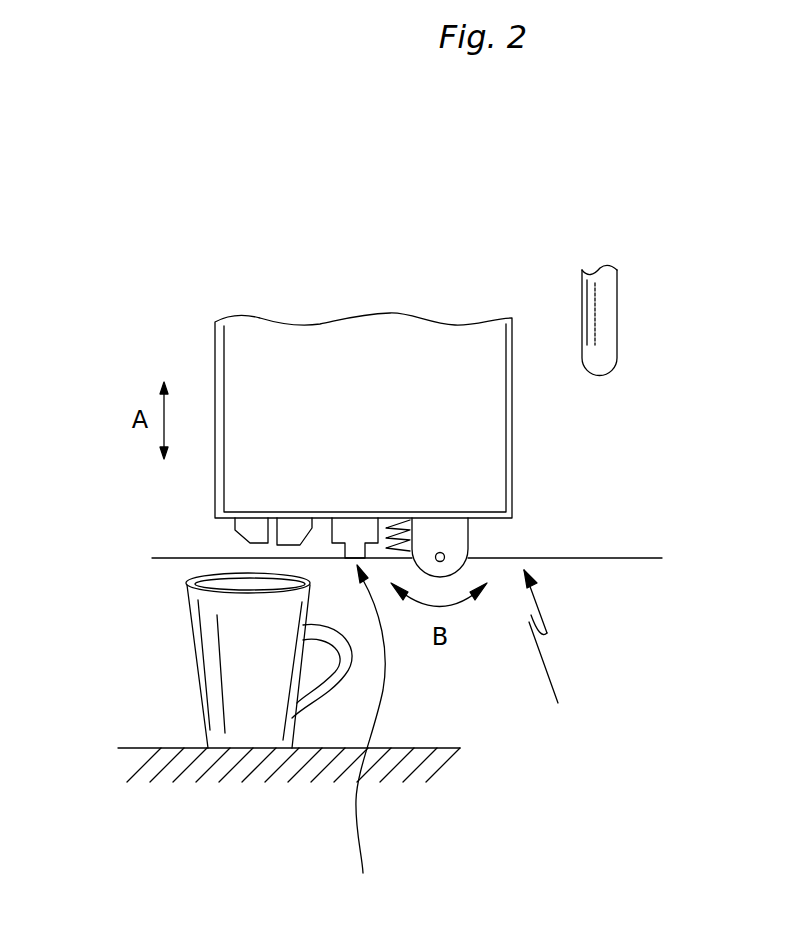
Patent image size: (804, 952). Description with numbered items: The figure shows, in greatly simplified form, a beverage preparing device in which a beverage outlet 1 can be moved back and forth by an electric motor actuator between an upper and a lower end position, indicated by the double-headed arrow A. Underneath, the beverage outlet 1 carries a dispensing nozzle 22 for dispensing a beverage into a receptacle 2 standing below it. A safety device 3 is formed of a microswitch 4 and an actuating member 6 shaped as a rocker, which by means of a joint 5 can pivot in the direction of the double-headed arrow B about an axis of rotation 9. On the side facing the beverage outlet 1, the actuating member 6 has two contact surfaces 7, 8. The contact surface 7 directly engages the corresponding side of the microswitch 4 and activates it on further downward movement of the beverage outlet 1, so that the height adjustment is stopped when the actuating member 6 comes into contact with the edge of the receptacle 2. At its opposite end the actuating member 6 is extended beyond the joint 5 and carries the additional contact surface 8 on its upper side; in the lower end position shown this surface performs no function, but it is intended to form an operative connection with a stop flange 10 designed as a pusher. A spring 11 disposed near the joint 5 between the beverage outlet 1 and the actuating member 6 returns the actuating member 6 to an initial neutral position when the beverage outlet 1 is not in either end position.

The beverage outlet 1 is at (245, 337).
The receptacle 2 is at (248, 693).
The safety device 3 is at (547, 653).
The microswitch 4 is at (360, 530).
The joint 5 is at (441, 531).
The actuating member 6 is at (577, 558).
The contact surface 7 is at (370, 735).
The additional contact surface 8 is at (636, 555).
The axis of rotation 9 is at (445, 553).
The stop flange 10 is at (600, 327).
The spring 11 is at (388, 547).
The dispensing nozzle 22 is at (235, 529).